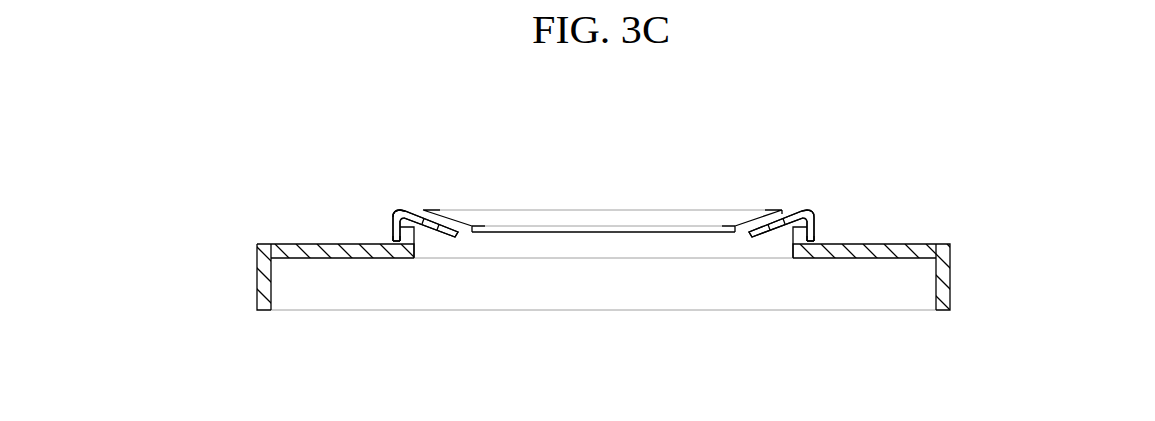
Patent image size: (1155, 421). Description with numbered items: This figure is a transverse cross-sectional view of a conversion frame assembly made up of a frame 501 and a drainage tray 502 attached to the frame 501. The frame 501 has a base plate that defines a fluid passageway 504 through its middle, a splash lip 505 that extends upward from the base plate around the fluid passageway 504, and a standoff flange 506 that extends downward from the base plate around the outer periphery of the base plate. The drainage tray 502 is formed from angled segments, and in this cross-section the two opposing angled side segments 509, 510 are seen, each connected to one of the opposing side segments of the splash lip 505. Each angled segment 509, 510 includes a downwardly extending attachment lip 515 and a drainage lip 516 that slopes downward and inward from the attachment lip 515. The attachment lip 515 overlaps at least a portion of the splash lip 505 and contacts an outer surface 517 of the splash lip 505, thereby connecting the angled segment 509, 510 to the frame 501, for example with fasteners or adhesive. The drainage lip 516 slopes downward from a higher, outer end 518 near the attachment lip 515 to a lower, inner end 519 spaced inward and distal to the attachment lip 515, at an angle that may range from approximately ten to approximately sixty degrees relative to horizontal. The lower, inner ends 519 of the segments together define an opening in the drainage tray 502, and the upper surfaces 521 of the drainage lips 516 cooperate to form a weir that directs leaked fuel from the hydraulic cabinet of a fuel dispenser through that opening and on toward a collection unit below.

The frame 501 is at (960, 300).
The drainage tray 502 is at (428, 157).
The fluid passageway 504 is at (574, 287).
The splash lip 505 is at (412, 240).
The standoff flange 506 is at (950, 276).
The angled side segment 509 is at (813, 210).
The angled side segment 510 is at (398, 212).
The attachment lip 515 is at (393, 226).
The drainage lip 516 is at (440, 223).
The outer surface 517 is at (395, 239).
The outer end 518 is at (403, 211).
The inner end 519 is at (662, 340).
The upper surface 521 is at (428, 215).